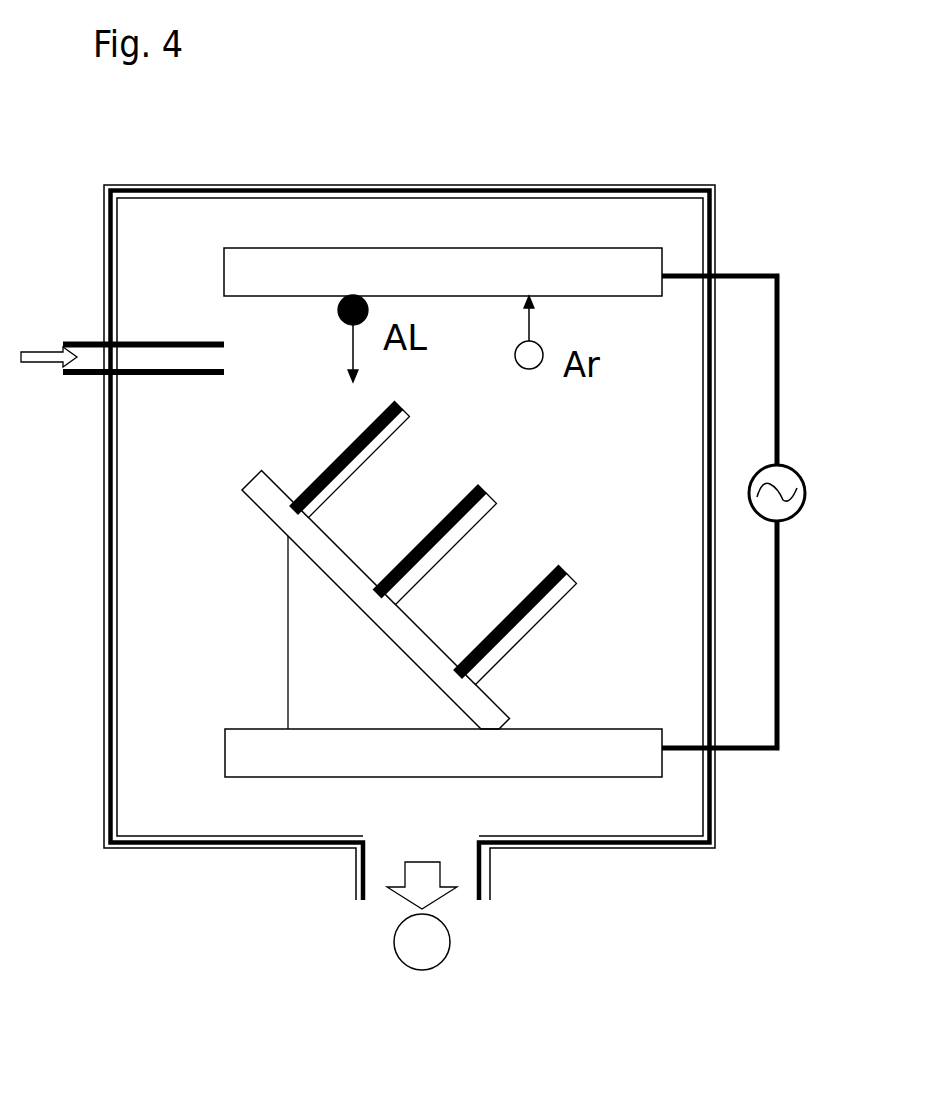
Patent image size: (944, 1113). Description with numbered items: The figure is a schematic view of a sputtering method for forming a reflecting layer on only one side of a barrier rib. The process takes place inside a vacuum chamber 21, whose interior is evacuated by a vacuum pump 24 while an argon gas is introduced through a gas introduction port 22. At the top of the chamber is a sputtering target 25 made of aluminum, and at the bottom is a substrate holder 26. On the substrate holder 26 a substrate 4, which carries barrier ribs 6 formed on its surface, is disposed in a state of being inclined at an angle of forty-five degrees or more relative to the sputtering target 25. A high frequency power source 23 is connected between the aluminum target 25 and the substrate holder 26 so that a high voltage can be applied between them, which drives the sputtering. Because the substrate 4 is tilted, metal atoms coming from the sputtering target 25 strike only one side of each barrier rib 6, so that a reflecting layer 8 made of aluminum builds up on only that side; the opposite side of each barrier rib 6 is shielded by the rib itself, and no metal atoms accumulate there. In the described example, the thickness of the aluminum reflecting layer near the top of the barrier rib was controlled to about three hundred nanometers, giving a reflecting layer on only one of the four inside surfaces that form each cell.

The vacuum chamber 21 is at (235, 186).
The gas introduction port 22 is at (140, 347).
The high frequency power source 23 is at (788, 465).
The vacuum pump 24 is at (447, 937).
The sputtering target 25 is at (247, 282).
The substrate holder 26 is at (260, 762).
The substrate 4 is at (262, 489).
The barrier rib 6 is at (550, 597).
The reflecting layer 8 is at (355, 446).